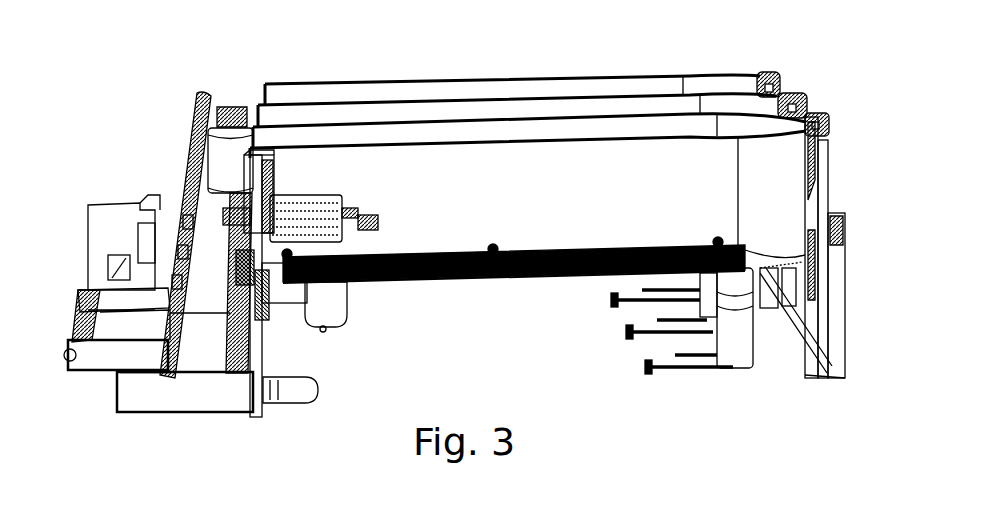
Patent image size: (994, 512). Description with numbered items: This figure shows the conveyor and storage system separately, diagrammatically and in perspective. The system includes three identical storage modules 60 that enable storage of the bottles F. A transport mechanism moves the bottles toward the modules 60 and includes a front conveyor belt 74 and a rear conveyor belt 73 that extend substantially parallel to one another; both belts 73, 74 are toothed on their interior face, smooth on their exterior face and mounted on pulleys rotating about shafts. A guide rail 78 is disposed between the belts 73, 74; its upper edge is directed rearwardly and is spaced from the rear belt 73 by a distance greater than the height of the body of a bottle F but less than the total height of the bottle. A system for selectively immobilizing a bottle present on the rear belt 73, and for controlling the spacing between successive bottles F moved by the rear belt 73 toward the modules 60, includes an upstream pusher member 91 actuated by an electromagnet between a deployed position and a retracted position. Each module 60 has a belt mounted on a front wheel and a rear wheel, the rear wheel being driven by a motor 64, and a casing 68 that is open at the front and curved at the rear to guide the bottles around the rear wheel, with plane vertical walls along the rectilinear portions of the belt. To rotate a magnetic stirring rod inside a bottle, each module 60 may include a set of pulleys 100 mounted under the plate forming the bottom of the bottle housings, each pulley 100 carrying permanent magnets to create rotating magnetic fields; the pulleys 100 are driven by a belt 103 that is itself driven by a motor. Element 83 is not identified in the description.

The storage module 60 is at (780, 72).
The motor 64 is at (742, 328).
The casing 68 is at (613, 188).
The rear conveyor belt 73 is at (200, 302).
The front conveyor belt 74 is at (122, 303).
The guide rail 78 is at (147, 210).
The rail end support plate 83 is at (280, 150).
The upstream pusher member 91 is at (293, 196).
The pulley 100 is at (470, 280).
The belt 103 is at (392, 282).
The bottle F is at (203, 157).